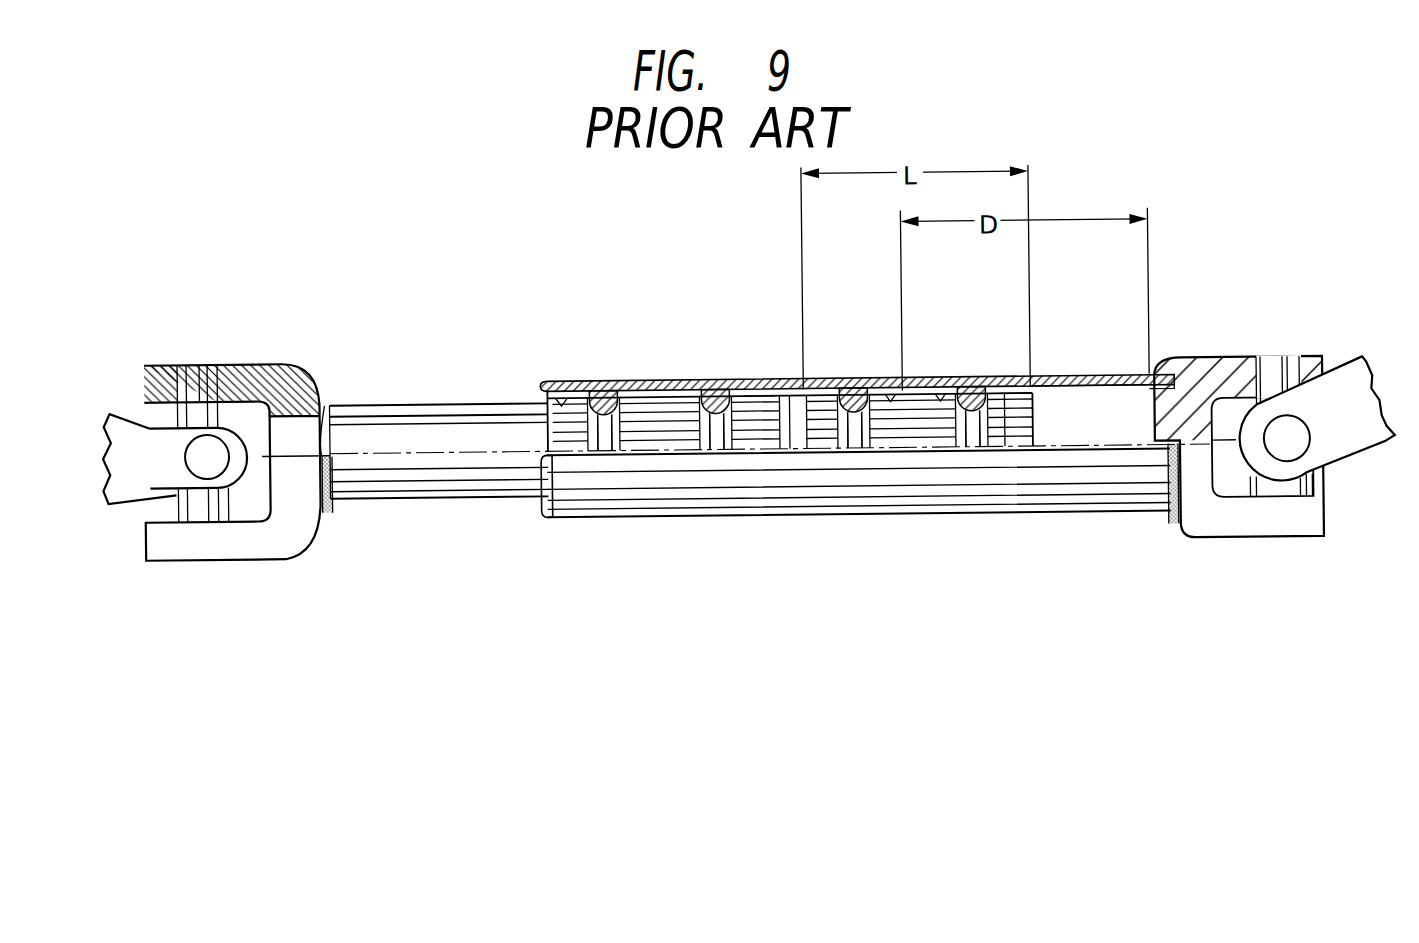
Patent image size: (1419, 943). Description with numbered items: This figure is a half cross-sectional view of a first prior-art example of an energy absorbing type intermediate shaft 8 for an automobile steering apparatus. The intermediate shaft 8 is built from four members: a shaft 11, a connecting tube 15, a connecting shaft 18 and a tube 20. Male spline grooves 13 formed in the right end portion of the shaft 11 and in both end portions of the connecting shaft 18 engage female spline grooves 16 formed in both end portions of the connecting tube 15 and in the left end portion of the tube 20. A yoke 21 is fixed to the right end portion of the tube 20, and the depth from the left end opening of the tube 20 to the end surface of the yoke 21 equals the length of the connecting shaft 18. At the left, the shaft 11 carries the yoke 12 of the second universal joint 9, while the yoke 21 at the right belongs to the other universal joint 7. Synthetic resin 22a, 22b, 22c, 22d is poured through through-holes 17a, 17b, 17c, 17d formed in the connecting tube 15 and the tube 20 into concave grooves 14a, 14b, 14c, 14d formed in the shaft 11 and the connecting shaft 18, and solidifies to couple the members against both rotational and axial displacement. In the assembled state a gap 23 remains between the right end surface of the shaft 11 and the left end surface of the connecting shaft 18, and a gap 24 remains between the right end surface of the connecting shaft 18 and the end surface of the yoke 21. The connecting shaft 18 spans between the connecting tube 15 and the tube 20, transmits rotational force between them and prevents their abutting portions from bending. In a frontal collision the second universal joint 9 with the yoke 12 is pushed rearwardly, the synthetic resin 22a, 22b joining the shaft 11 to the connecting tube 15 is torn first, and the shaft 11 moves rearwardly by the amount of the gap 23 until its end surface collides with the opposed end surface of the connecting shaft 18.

The yoke of universal joint 7 is at (1218, 375).
The intermediate shaft 8 is at (826, 330).
The second universal joint 9 is at (248, 370).
The shaft 11 is at (394, 426).
The yoke 12 is at (292, 532).
The male spline grooves 13 is at (758, 378).
The concave groove 14a is at (612, 447).
The concave groove 14b is at (728, 447).
The concave groove 14c is at (866, 447).
The concave groove 14d is at (984, 447).
The connecting tube 15 is at (660, 372).
The female spline grooves 16 is at (557, 380).
The through-hole 17a is at (602, 380).
The through-hole 17b is at (718, 380).
The through-hole 17c is at (851, 380).
The through-hole 17d is at (975, 380).
The connecting shaft 18 is at (922, 372).
The tube 20 is at (1133, 525).
The yoke 21 is at (1268, 542).
The synthetic resin 22a is at (604, 447).
The synthetic resin 22b is at (722, 447).
The synthetic resin 22c is at (858, 447).
The synthetic resin 22d is at (976, 447).
The gap 23 is at (787, 376).
The gap 24 is at (1093, 376).